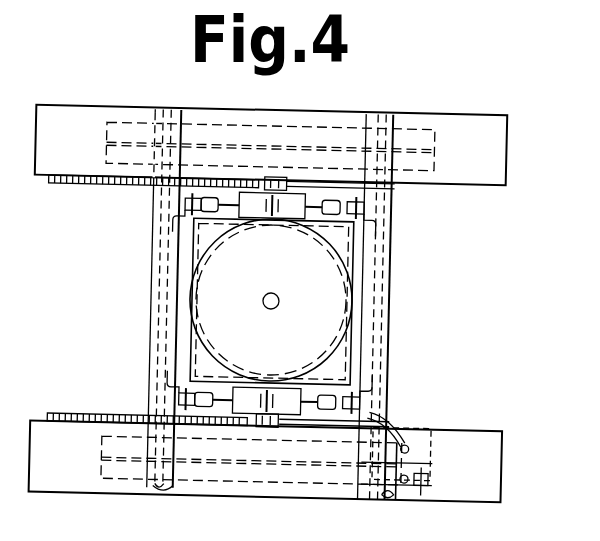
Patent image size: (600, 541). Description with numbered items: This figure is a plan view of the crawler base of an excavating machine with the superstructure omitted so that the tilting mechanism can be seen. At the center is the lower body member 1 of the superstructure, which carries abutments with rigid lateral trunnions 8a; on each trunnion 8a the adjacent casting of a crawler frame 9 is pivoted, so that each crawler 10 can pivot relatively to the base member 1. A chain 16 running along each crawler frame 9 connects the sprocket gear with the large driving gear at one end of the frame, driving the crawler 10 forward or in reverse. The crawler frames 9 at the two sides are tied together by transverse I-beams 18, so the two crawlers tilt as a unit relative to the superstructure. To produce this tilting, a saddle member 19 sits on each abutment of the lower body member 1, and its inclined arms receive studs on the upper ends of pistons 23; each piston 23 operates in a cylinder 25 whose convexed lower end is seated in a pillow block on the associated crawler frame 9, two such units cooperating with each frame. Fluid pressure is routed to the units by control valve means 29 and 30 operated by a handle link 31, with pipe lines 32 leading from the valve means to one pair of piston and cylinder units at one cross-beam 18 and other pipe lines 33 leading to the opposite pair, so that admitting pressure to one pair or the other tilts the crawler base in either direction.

The lower body member 1 is at (346, 262).
The lateral trunnion 8a is at (288, 180).
The crawler frame 9 is at (339, 123).
The crawler 10 is at (473, 112).
The chain 16 is at (82, 190).
The transverse I-beam 18 is at (390, 292).
The saddle member 19 is at (264, 216).
The piston 23 is at (226, 224).
The cylinder 25 is at (206, 198).
The control valve means 29 is at (414, 436).
The control valve means 30 is at (410, 494).
The handle link 31 is at (436, 480).
The pipe line 32 is at (392, 334).
The pipe line 33 is at (158, 296).